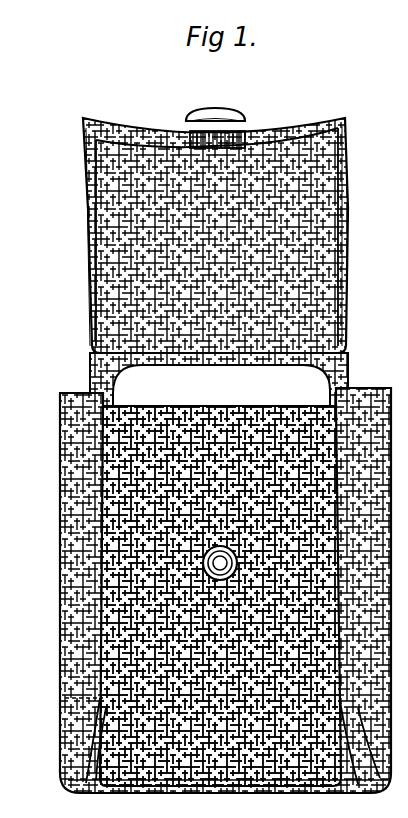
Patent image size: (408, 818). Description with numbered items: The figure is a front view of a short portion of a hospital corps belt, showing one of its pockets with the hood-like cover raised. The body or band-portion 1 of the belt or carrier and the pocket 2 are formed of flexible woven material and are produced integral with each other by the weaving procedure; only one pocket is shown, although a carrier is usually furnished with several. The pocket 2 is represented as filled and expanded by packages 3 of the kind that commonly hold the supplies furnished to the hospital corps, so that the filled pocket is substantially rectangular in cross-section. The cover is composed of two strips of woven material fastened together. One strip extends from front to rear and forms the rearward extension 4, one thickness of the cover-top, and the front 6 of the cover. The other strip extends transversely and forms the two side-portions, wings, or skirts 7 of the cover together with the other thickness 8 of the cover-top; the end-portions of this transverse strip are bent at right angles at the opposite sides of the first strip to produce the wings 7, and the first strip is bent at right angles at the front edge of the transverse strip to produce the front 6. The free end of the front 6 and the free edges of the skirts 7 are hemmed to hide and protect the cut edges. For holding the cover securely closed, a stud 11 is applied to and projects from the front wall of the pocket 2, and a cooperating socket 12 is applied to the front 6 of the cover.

The body or band-portion 1 is at (52, 500).
The pocket 2 is at (183, 408).
The packages 3 is at (221, 385).
The rearward extension 4 is at (82, 367).
The front of the cover 6 is at (262, 120).
The side-portions, wings, or skirts 7 is at (78, 143).
The thickness of the top of the cover 8 is at (310, 240).
The stud 11 is at (225, 541).
The socket 12 is at (190, 105).